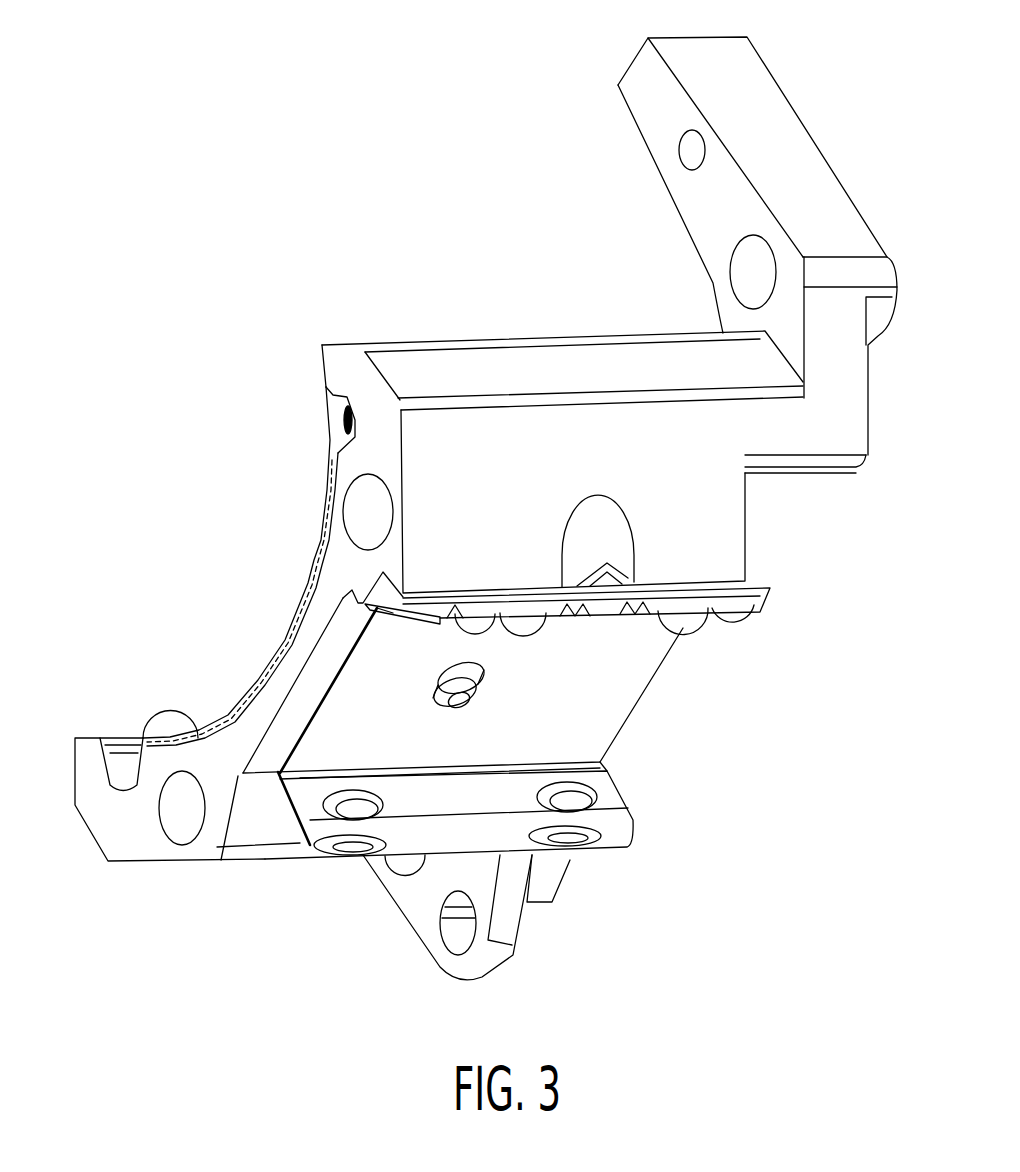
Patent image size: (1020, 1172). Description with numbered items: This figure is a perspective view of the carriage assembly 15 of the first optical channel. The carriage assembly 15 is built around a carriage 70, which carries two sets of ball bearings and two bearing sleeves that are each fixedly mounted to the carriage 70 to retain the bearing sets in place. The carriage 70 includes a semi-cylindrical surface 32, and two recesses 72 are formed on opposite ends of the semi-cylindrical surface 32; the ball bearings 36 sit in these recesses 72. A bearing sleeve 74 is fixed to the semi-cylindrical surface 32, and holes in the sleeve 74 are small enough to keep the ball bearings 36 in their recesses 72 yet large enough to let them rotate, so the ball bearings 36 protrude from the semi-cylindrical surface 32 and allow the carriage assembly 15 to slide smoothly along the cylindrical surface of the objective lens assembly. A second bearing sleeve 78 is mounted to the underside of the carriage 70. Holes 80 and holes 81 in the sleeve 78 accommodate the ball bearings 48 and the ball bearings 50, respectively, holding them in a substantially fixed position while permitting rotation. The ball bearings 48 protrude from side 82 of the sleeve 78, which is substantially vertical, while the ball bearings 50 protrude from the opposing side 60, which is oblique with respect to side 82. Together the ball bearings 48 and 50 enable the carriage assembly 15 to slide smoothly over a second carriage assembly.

The carriage assembly 15 is at (384, 220).
The semi-cylindrical surface 32 is at (240, 698).
The ball bearings 36 is at (167, 733).
The ball bearings 48 is at (575, 850).
The ball bearings 50 is at (477, 622).
The oblique side 60 is at (385, 622).
The carriage 70 is at (740, 60).
The recesses 72 is at (330, 408).
The bearing sleeve 74 is at (246, 706).
The bearing sleeve 78 is at (590, 718).
The holes 80 is at (626, 793).
The holes 81 is at (477, 615).
The side 82 is at (462, 812).